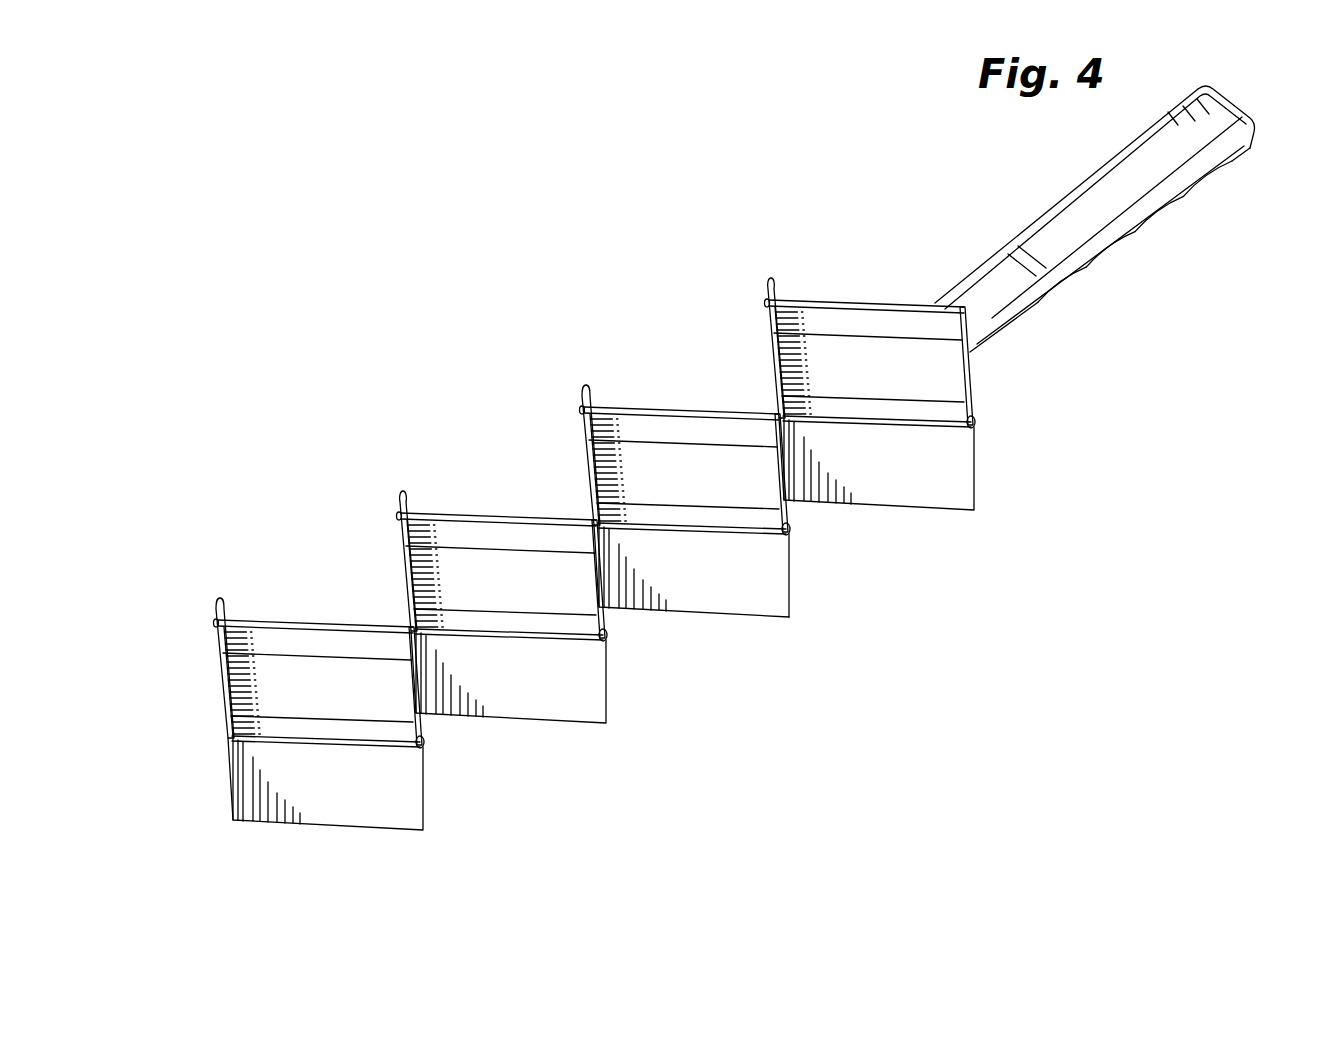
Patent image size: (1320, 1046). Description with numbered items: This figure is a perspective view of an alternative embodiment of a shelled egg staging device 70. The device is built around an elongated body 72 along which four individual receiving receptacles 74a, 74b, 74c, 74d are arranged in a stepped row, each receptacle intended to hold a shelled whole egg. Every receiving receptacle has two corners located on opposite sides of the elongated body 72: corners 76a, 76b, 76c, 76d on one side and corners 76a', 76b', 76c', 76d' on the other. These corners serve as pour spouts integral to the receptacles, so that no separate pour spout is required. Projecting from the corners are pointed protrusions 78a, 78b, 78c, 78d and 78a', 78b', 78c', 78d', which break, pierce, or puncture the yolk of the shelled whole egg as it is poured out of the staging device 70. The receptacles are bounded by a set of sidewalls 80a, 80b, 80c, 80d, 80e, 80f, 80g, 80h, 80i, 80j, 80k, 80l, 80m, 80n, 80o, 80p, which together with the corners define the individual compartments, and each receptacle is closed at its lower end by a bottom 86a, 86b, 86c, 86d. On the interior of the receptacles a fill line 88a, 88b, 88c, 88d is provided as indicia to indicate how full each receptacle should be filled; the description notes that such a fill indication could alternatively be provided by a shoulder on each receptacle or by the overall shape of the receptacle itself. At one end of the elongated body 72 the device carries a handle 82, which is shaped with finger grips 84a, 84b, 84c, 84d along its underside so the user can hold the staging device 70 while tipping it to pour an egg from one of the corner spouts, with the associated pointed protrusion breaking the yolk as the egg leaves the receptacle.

The shelled egg staging device 70 is at (708, 444).
The elongated body 72 is at (1113, 221).
The receiving receptacle 74a is at (325, 676).
The receiving receptacle 74b is at (509, 622).
The receiving receptacle 74c is at (681, 502).
The receiving receptacle 74d is at (864, 395).
The corner 76a is at (471, 768).
The corner 76b is at (649, 665).
The corner 76c is at (825, 546).
The corner 76d is at (1019, 408).
The corner 76a' is at (172, 640).
The corner 76b' is at (345, 502).
The corner 76c' is at (516, 397).
The corner 76d' is at (713, 298).
The pointed protrusion 78a is at (462, 701).
The pointed protrusion 78b is at (663, 596).
The pointed protrusion 78c is at (827, 481).
The pointed protrusion 78d is at (1006, 387).
The pointed protrusion 78a' is at (183, 649).
The pointed protrusion 78b' is at (356, 540).
The pointed protrusion 78c' is at (528, 433).
The pointed protrusion 78d' is at (716, 331).
The sidewall 80a is at (253, 805).
The sidewall 80b is at (221, 692).
The sidewall 80c is at (317, 635).
The sidewall 80d is at (427, 757).
The sidewall 80e is at (600, 714).
The sidewall 80f is at (400, 588).
The sidewall 80g is at (533, 528).
The sidewall 80h is at (578, 640).
The sidewall 80i is at (780, 590).
The sidewall 80j is at (585, 503).
The sidewall 80k is at (717, 427).
The sidewall 80l is at (781, 573).
The sidewall 80m is at (975, 498).
The sidewall 80n is at (772, 383).
The sidewall 80o is at (892, 320).
The sidewall 80p is at (972, 353).
The handle 82 is at (1204, 87).
The finger grip 84a is at (1053, 298).
The finger grip 84b is at (1107, 250).
The finger grip 84c is at (1153, 217).
The finger grip 84d is at (1198, 183).
The bottom 86a is at (317, 727).
The bottom 86b is at (502, 618).
The bottom 86c is at (670, 510).
The bottom 86d is at (867, 407).
The fill line 88a is at (257, 653).
The fill line 88b is at (452, 550).
The fill line 88c is at (640, 440).
The fill line 88d is at (838, 335).